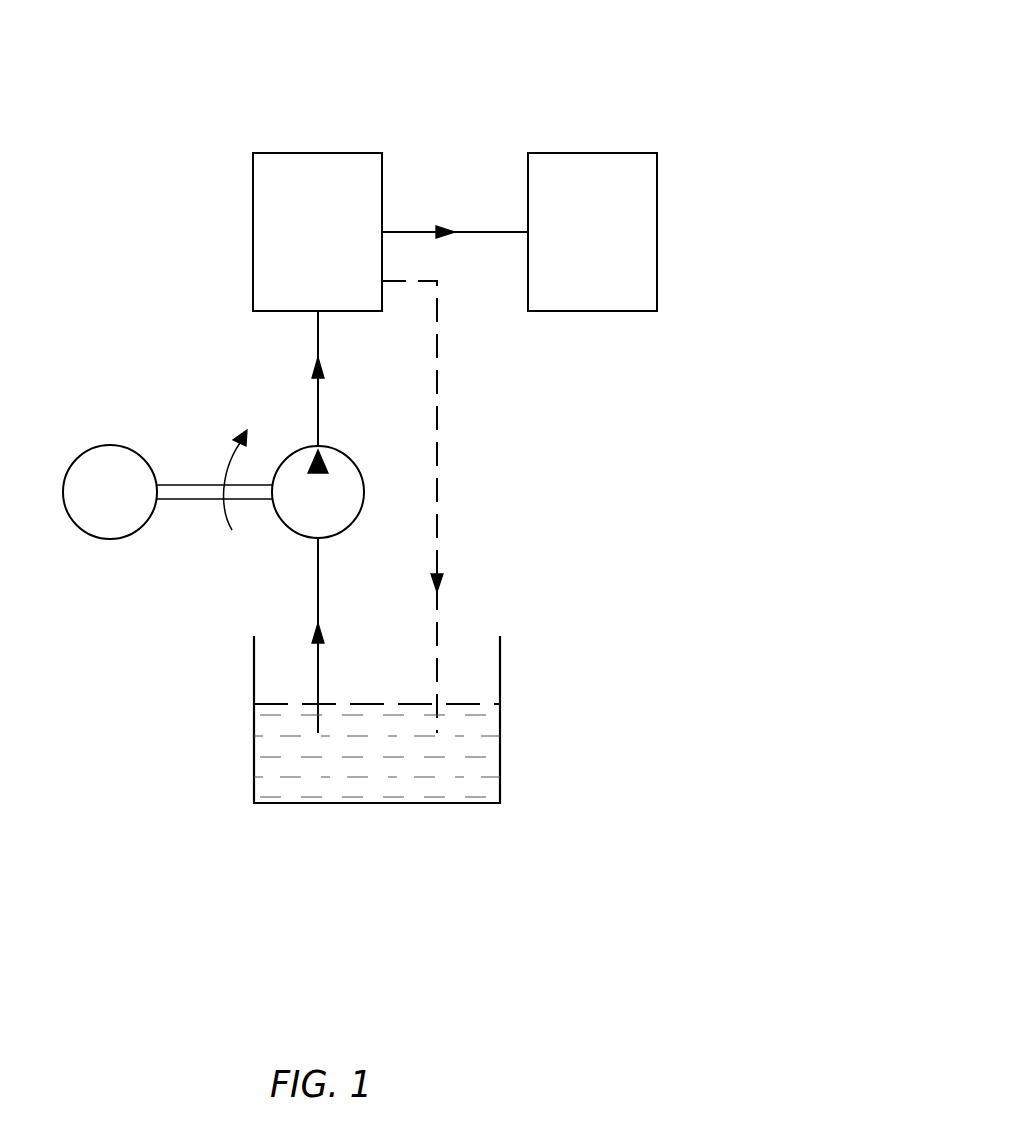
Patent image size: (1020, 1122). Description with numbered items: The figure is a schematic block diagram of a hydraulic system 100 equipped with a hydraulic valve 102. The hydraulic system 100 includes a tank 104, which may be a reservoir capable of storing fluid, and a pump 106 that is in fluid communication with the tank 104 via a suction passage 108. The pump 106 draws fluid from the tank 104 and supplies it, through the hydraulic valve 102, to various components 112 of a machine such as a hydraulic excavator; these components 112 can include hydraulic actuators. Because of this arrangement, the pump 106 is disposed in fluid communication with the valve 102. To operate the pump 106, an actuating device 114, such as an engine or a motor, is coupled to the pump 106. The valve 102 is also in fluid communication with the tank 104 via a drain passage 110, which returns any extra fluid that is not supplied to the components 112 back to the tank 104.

The hydraulic system 100 is at (672, 67).
The hydraulic valve 102 is at (335, 246).
The tank 104 is at (500, 690).
The pump 106 is at (334, 514).
The suction passage 108 is at (318, 572).
The drain passage 110 is at (437, 477).
The components 112 is at (608, 246).
The actuating device 114 is at (124, 506).